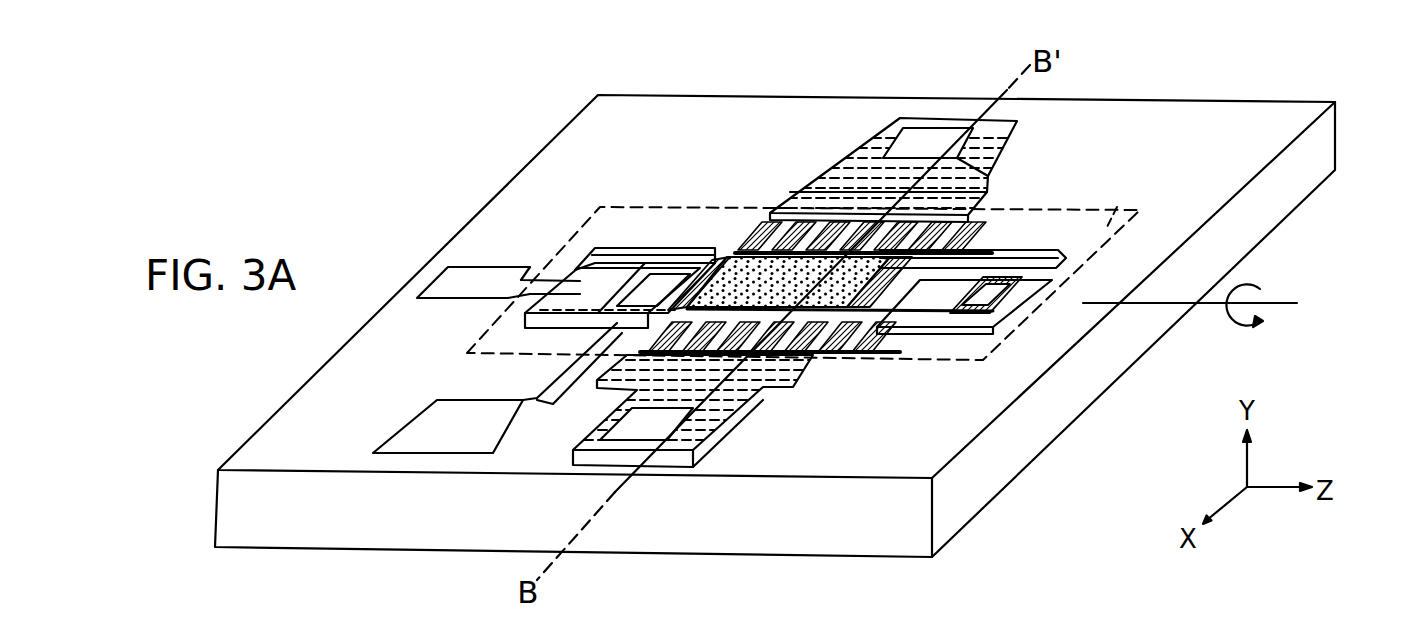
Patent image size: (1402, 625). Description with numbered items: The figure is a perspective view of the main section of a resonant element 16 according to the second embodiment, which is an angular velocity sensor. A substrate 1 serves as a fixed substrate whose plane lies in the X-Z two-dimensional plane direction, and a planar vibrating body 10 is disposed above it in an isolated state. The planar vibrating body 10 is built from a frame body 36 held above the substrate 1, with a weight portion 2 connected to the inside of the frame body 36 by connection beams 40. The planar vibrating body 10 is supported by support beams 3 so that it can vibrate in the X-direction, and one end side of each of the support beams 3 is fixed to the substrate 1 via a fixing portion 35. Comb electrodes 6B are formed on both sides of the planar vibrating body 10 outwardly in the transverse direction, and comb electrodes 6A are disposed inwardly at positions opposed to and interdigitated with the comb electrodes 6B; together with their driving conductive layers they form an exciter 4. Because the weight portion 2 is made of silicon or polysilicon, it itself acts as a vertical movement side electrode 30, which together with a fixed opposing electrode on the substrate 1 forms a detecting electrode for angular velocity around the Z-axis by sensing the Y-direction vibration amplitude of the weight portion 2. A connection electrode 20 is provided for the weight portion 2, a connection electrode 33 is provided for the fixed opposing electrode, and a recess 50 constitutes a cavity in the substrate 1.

The substrate 1 is at (1186, 118).
The weight portion 2 is at (774, 278).
The support beams 3 is at (650, 248).
The exciter 4 is at (742, 224).
The comb electrodes 6A is at (763, 240).
The comb electrodes 6B is at (980, 243).
The planar vibrating body 10 is at (650, 247).
The resonant element 16 is at (512, 136).
The connection electrode 20 is at (465, 278).
The vertical movement side electrode 30 is at (793, 247).
The connection electrode 33 is at (444, 420).
The fixing portion 35 is at (1020, 120).
The frame body 36 is at (943, 337).
The connection beams 40 is at (997, 253).
The recess 50 is at (1117, 207).